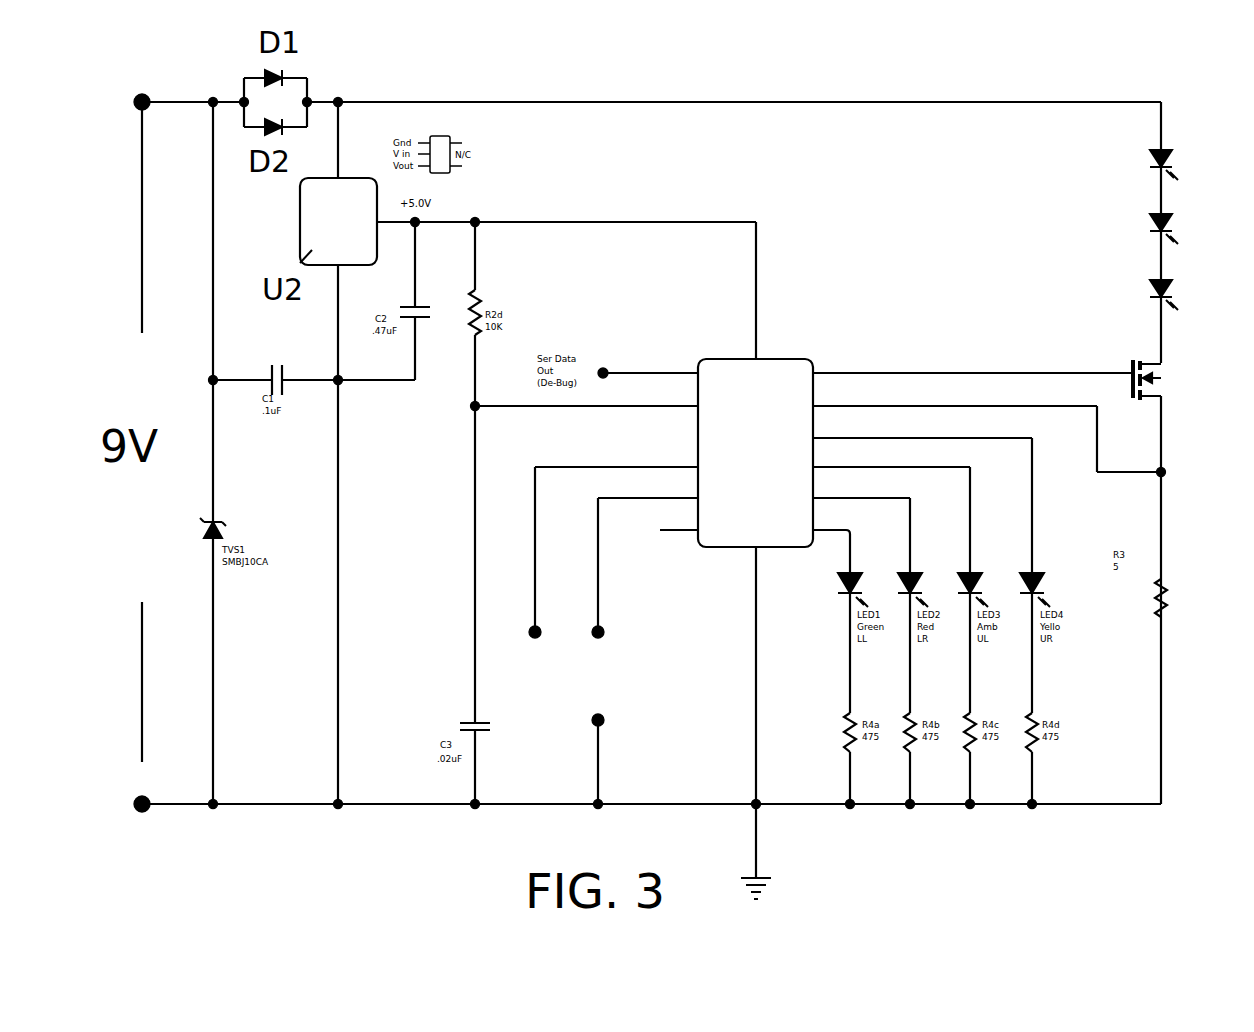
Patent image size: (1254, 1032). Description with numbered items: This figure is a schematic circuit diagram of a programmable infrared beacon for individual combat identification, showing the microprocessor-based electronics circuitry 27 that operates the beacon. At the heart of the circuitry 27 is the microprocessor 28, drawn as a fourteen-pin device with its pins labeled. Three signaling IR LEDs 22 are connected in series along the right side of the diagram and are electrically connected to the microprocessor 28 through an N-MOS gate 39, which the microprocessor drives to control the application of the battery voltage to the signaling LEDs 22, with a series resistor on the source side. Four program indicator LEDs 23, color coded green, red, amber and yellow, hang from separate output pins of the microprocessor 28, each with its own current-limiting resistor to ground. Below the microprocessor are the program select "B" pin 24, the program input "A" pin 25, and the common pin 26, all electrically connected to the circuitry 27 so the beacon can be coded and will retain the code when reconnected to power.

The signaling IR LEDs 22 is at (1183, 163).
The program indicator LEDs 23 is at (835, 605).
The program select "B" pin 24 is at (604, 632).
The program input "A" pin 25 is at (533, 644).
The common pin 26 is at (601, 710).
The microprocessor-based electronics circuitry 27 is at (958, 208).
The microprocessor 28 is at (772, 373).
The N-MOS gate 39 is at (1118, 367).